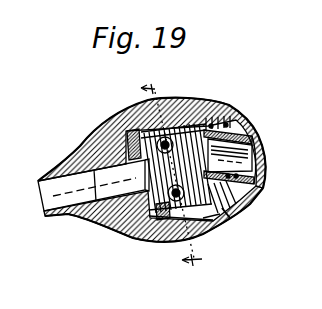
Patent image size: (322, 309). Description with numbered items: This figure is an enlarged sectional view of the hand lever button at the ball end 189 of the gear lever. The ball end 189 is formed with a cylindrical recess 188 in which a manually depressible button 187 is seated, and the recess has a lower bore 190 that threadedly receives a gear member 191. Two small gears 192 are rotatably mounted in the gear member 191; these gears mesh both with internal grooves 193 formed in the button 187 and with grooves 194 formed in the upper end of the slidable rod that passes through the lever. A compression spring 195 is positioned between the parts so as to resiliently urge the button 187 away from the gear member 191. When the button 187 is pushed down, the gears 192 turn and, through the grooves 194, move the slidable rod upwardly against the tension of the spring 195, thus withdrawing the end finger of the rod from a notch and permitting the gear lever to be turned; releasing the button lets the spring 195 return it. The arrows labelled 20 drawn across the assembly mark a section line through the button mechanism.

The section line 20- 20 is at (166, 167).
The manually depressible button 187 is at (258, 148).
The cylindrical recess 188 is at (190, 110).
The ball end 189 is at (202, 220).
The lower bore 190 is at (104, 150).
The gear member 191 is at (155, 228).
The small gears 192 is at (160, 112).
The internal grooves 193 is at (203, 108).
The grooves 194 is at (238, 131).
The compression spring 195 is at (238, 184).